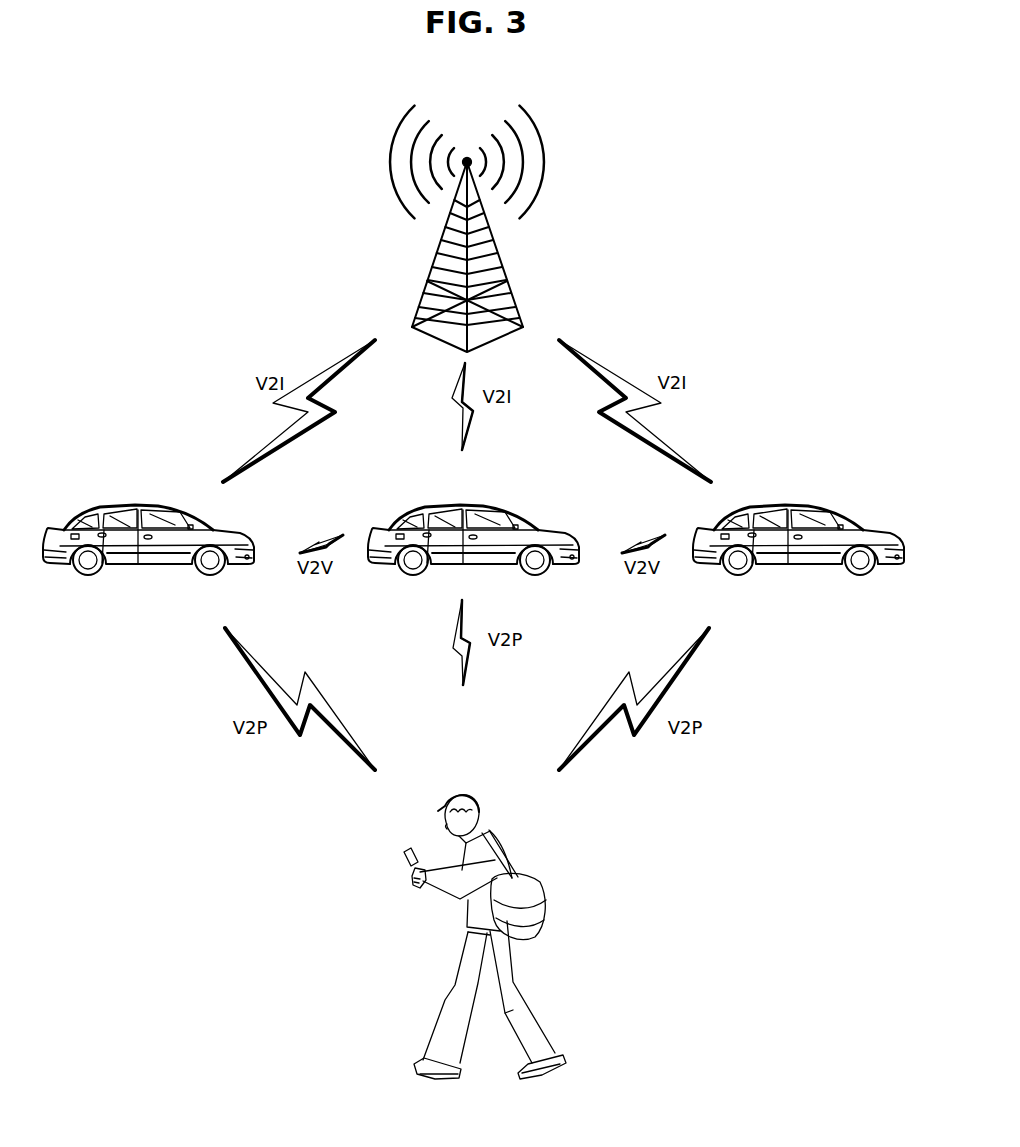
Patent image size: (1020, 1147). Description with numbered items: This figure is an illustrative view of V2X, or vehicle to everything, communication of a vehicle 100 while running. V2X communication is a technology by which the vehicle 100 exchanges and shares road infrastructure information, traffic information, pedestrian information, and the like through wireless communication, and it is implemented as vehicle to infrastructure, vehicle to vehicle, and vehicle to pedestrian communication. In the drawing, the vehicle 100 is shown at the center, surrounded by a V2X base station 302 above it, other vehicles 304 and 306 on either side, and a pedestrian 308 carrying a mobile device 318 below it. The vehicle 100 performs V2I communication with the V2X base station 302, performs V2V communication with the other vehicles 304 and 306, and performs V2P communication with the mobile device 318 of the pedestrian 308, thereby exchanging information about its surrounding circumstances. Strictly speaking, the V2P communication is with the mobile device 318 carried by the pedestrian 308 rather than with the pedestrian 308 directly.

The V2X base station 302 is at (502, 255).
The other vehicle 304 is at (131, 505).
The vehicle 100 is at (457, 505).
The other vehicle 306 is at (783, 505).
The pedestrian 308 is at (461, 793).
The mobile device 318 is at (407, 851).